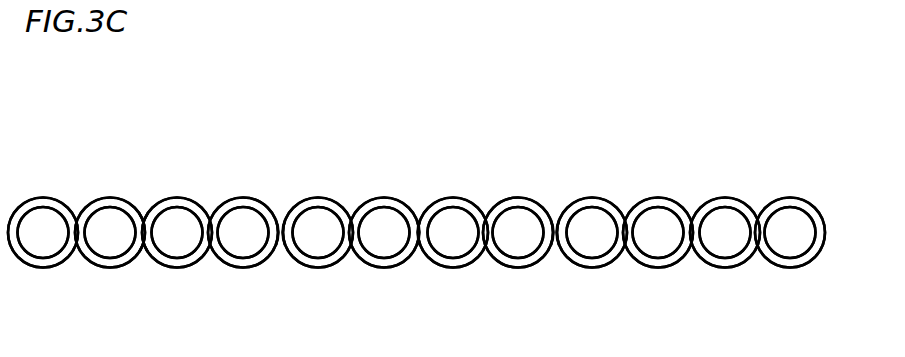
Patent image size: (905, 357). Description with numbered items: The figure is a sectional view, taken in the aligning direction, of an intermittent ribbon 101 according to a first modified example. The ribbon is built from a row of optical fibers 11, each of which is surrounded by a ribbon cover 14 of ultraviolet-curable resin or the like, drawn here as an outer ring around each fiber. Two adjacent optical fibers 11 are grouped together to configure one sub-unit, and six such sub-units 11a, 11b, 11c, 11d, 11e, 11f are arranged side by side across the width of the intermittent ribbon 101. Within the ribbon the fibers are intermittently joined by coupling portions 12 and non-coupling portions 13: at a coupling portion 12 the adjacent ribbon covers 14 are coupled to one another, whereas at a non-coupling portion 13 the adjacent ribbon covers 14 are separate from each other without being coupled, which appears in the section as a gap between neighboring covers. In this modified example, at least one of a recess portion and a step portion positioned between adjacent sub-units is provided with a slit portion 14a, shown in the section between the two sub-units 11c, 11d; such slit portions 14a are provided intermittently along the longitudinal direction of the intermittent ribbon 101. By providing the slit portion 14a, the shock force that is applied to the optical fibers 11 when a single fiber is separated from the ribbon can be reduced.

The intermittent ribbon 101 is at (548, 102).
The optical fiber 11 is at (46, 245).
The sub-unit 11a is at (135, 191).
The sub-unit 11b is at (155, 192).
The sub-unit 11c is at (302, 187).
The sub-unit 11d is at (438, 192).
The sub-unit 11e is at (572, 193).
The sub-unit 11f is at (705, 192).
The coupling portion 12 is at (143, 214).
The non-coupling portion 13 is at (277, 252).
The ribbon cover 14 is at (110, 201).
The slit portion 14a is at (417, 235).